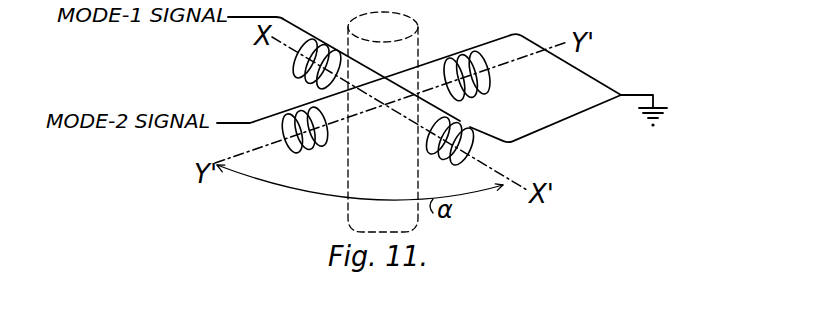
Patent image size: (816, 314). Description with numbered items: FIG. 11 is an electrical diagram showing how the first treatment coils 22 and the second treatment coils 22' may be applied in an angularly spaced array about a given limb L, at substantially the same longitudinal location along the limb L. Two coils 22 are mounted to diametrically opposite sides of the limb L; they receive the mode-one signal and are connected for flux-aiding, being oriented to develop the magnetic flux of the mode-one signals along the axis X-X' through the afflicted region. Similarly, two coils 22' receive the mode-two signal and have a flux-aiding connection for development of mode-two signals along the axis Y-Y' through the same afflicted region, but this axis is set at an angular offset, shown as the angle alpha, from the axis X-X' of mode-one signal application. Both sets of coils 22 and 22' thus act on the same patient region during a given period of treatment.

The first treatment coil 22 is at (386, 102).
The second treatment coil 22' is at (423, 118).
The limb L is at (420, 33).